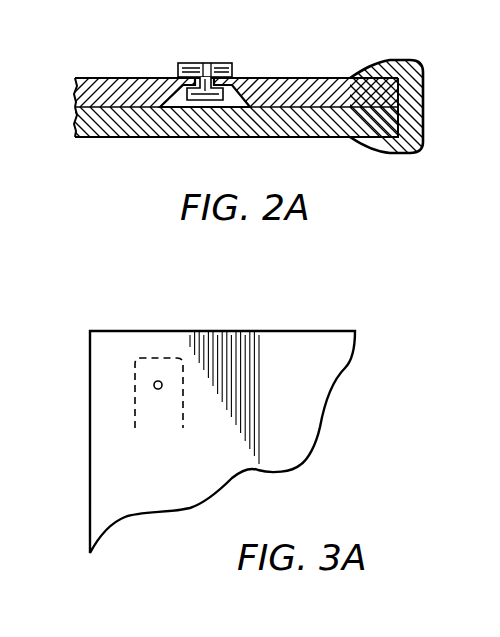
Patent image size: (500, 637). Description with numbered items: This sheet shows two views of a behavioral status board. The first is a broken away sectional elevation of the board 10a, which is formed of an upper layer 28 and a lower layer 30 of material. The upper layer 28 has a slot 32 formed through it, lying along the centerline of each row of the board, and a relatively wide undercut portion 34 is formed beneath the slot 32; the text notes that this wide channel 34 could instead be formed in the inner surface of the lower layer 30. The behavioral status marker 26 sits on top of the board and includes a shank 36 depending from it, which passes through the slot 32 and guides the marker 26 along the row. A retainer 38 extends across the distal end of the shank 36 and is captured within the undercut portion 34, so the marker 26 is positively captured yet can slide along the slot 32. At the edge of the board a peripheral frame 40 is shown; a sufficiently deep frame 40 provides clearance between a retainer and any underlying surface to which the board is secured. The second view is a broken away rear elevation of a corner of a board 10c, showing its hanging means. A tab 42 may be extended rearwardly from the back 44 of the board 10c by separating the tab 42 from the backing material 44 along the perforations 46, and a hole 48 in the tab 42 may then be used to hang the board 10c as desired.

In FIG. 2A, the board 10a is at (362, 192).
In FIG. 2A, the behavioral status marker 26 is at (215, 108).
In FIG. 2A, the upper layer 28 is at (108, 78).
In FIG. 2A, the lower layer 30 is at (113, 138).
In FIG. 2A, the slot 32 is at (158, 107).
In FIG. 2A, the undercut portion 34 is at (275, 110).
In FIG. 2A, the shank 36 is at (235, 76).
In FIG. 2A, the retainer 38 is at (209, 100).
In FIG. 2A, the peripheral frame 40 is at (423, 97).
In FIG. 3A, the board 10c is at (298, 493).
In FIG. 3A, the tab 42 is at (168, 413).
In FIG. 3A, the back 44 is at (301, 386).
In FIG. 3A, the perforations 46 is at (137, 383).
In FIG. 3A, the hole 48 is at (161, 381).